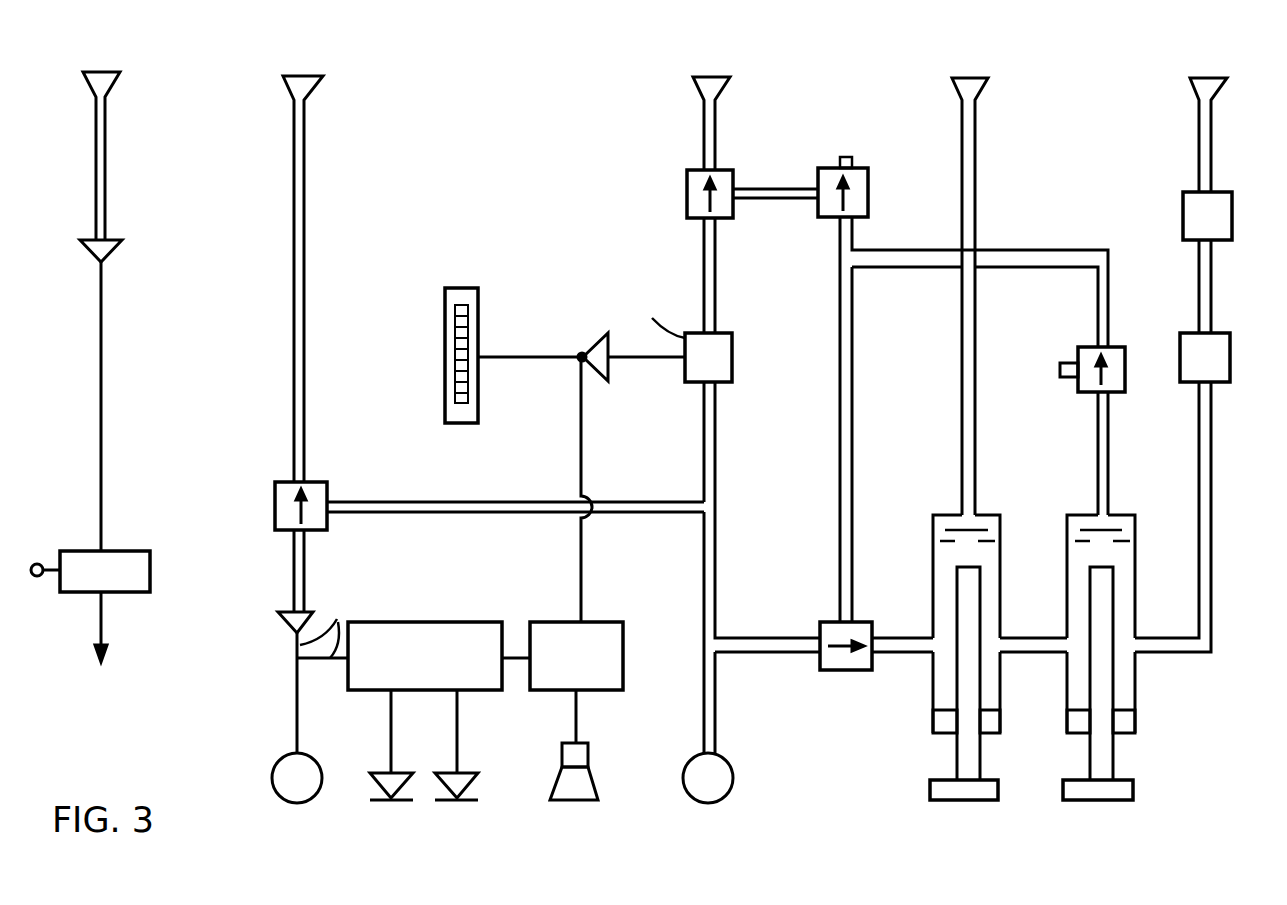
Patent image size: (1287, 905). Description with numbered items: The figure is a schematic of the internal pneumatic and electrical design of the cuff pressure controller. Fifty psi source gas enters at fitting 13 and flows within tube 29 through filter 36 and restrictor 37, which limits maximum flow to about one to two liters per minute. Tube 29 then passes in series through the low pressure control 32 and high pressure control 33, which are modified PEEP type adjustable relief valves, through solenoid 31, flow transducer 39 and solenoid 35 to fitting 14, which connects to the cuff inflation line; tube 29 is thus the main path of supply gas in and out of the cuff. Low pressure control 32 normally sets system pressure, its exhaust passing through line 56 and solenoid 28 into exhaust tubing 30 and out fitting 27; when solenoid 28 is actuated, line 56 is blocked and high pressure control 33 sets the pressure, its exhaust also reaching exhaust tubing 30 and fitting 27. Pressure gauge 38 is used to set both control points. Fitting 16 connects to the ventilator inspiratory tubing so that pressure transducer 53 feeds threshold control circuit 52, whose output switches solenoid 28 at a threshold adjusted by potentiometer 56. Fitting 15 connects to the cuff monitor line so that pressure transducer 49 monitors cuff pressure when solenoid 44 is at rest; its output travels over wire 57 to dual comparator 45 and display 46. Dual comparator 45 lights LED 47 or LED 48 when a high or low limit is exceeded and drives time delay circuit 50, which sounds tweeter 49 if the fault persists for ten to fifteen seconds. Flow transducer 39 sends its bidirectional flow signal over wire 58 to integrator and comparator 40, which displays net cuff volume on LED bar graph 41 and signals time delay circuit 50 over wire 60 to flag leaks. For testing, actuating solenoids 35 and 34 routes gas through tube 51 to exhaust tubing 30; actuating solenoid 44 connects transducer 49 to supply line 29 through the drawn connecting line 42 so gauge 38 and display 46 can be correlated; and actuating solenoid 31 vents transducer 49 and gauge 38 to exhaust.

The fitting 13 is at (1190, 81).
The fitting 14 is at (695, 85).
The fitting 15 is at (292, 82).
The external fitting 16 is at (88, 80).
The exhaust fitting 27 is at (955, 86).
The solenoid 28 is at (1078, 386).
The tube 29 is at (704, 145).
The exhaust tubing 30 is at (1000, 250).
The solenoid 31 is at (838, 672).
The low pressure control 32 is at (1135, 688).
The high pressure control 33 is at (935, 681).
The solenoid 34 is at (868, 196).
The solenoid 35 is at (687, 204).
The filter 36 is at (1183, 222).
The restrictor 37 is at (1180, 351).
The pressure gauge 38 is at (712, 758).
The flow transducer 39 is at (691, 384).
The integrator and comparator 40 is at (586, 346).
The LED bar graph 41 is at (470, 288).
The line 42 is at (453, 501).
The solenoid 44 is at (275, 500).
The dual comparator 45 is at (425, 622).
The display system 46 is at (305, 756).
The LED 47 is at (389, 768).
The LED 48 is at (456, 768).
The pressure transducer / tweeter 49 is at (288, 619).
The time delay circuit 50 is at (537, 622).
The tube 51 is at (777, 201).
The threshold control circuit 52 is at (120, 593).
The pressure transducer 53 is at (104, 263).
The line / potentiometer 56 is at (38, 577).
The wire 57 is at (328, 626).
The wire 58 is at (645, 362).
The wire 60 is at (580, 446).